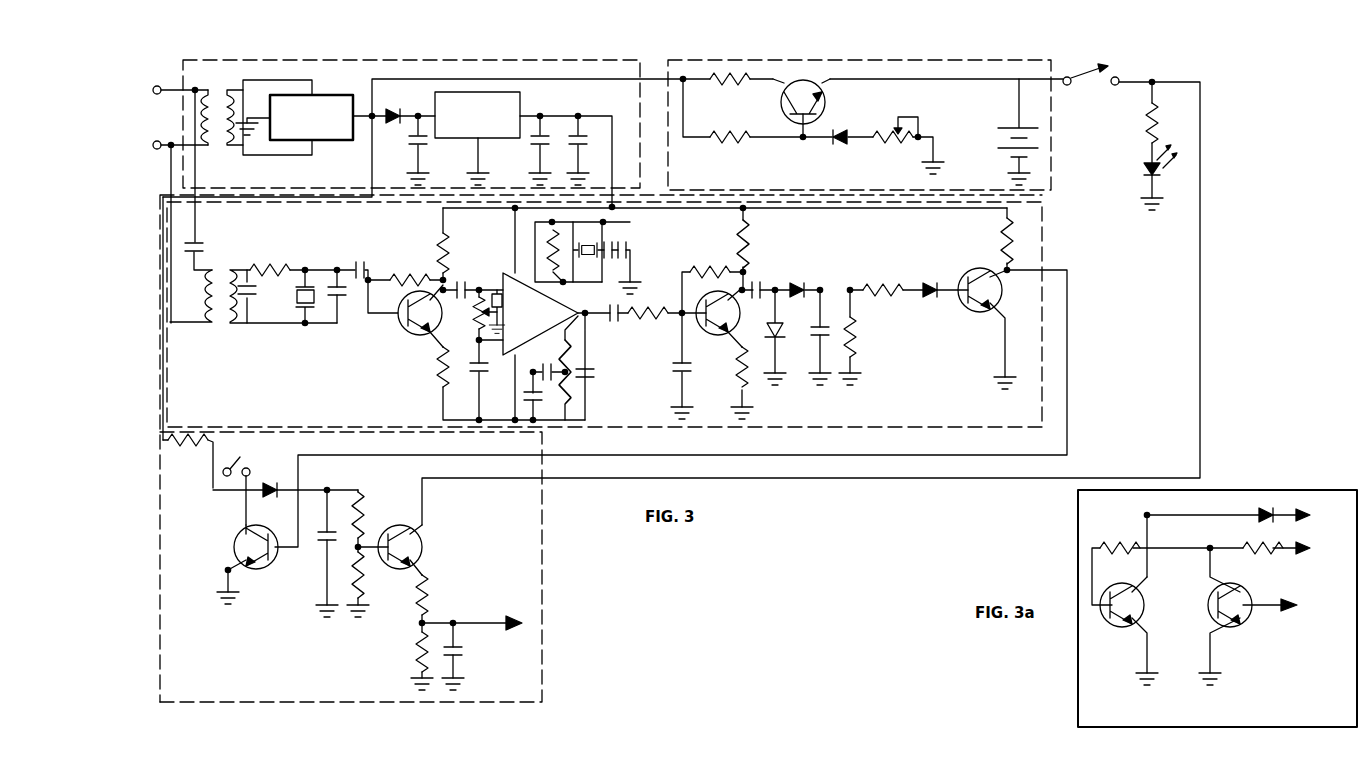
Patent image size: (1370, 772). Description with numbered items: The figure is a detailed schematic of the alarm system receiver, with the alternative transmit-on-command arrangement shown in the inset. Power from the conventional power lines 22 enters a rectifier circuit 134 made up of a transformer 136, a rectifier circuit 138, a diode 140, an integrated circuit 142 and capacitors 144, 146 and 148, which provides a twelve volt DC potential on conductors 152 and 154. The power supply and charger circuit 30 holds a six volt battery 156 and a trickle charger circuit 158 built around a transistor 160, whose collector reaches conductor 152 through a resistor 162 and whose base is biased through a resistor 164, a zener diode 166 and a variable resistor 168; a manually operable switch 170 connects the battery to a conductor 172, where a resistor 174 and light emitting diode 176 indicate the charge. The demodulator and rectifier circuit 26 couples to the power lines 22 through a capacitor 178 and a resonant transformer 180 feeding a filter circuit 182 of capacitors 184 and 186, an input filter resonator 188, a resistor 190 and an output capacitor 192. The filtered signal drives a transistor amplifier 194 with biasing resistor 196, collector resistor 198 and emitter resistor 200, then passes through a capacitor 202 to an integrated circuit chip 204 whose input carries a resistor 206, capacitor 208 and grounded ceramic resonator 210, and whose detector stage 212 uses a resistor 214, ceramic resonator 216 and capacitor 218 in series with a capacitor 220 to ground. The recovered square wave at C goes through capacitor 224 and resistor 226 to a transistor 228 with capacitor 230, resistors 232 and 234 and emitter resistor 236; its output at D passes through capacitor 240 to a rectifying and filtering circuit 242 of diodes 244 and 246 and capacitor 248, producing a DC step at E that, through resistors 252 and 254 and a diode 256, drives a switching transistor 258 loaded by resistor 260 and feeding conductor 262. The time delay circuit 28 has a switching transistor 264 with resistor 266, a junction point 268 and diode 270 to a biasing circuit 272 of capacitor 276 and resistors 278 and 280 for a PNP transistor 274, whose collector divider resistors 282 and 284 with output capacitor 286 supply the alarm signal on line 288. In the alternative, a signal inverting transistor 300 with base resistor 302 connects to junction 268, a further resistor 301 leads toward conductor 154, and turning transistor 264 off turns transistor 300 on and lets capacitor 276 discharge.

In FIG. 3, the power lines 22 is at (162, 70).
In FIG. 3, the demodulator and rectifier circuit 26 is at (1042, 318).
In FIG. 3, the time delay circuit 28 is at (542, 614).
In FIG. 3, the power supply and charger circuit 30 is at (886, 60).
In FIG. 3, the rectifier circuit 134 is at (375, 49).
In FIG. 3, the transformer 136 is at (220, 90).
In FIG. 3, the rectifier circuit 138 is at (290, 95).
In FIG. 3, the diode 140 is at (394, 106).
In FIG. 3, the integrated circuit 142 is at (472, 92).
In FIG. 3, the capacitor 144 is at (430, 150).
In FIG. 3, the capacitor 146 is at (535, 150).
In FIG. 3, the capacitor 148 is at (588, 142).
In FIG. 3, the conductor 152 is at (160, 208).
In FIG. 3, the conductor 154 is at (820, 210).
In FIG. 3A, the conductor 154 is at (1317, 542).
In FIG. 3, the battery 156 is at (1018, 128).
In FIG. 3, the trickle charger circuit 158 is at (775, 72).
In FIG. 3, the transistor 160 is at (812, 90).
In FIG. 3, the resistor 162 is at (732, 78).
In FIG. 3, the resistor 164 is at (729, 136).
In FIG. 3, the zener diode 166 is at (841, 128).
In FIG. 3, the variable resistor 168 is at (884, 134).
In FIG. 3, the manually operable switch 170 is at (1096, 74).
In FIG. 3, the conductor 172 is at (1168, 82).
In FIG. 3, the resistor 174 is at (1148, 130).
In FIG. 3, the light emitting diode 176 is at (1142, 177).
In FIG. 3, the capacitor 178 is at (194, 250).
In FIG. 3, the resonant transformer 180 is at (218, 340).
In FIG. 3, the filter circuit 182 is at (297, 336).
In FIG. 3, the capacitor 184 is at (248, 308).
In FIG. 3, the capacitor 186 is at (346, 312).
In FIG. 3, the input filter resonator 188 is at (324, 270).
In FIG. 3, the resistor 190 is at (263, 264).
In FIG. 3, the output capacitor 192 is at (356, 262).
In FIG. 3, the transistor amplifier 194 is at (414, 336).
In FIG. 3, the biasing resistor 196 is at (400, 278).
In FIG. 3, the collector resistor 198 is at (442, 234).
In FIG. 3, the emitter resistor 200 is at (442, 386).
In FIG. 3, the capacitor 202 is at (460, 276).
In FIG. 3, the integrated circuit chip 204 is at (548, 326).
In FIG. 3, the resistor 206 is at (478, 313).
In FIG. 3, the capacitor 208 is at (480, 378).
In FIG. 3, the ceramic resonator 210 is at (494, 286).
In FIG. 3, the detector stage 212 is at (663, 242).
In FIG. 3, the resistor 214 is at (563, 283).
In FIG. 3, the ceramic resonator 216 is at (618, 258).
In FIG. 3, the capacitor 218 is at (612, 244).
In FIG. 3, the capacitor 220 is at (636, 248).
In FIG. 3, the capacitor 224 is at (626, 322).
In FIG. 3, the resistor 226 is at (667, 304).
In FIG. 3, the transistor 228 is at (724, 338).
In FIG. 3, the capacitor 230 is at (680, 354).
In FIG. 3, the resistor 232 is at (712, 281).
In FIG. 3, the resistor 234 is at (746, 252).
In FIG. 3, the resistor 236 is at (746, 390).
In FIG. 3, the capacitor 240 is at (762, 298).
In FIG. 3, the ground network 242 is at (804, 384).
In FIG. 3, the diode 244 is at (788, 337).
In FIG. 3, the diode 246 is at (794, 282).
In FIG. 3, the capacitor 248 is at (820, 338).
In FIG. 3, the resistor 252 is at (858, 342).
In FIG. 3, the resistor 254 is at (904, 286).
In FIG. 3, the diode 256 is at (932, 306).
In FIG. 3, the switching transistor 258 is at (1002, 290).
In FIG. 3A, the switching transistor 258 is at (1305, 600).
In FIG. 3, the resistor 260 is at (1015, 242).
In FIG. 3, the conductor 262 is at (1067, 379).
In FIG. 3A, the conductor 262 is at (1262, 610).
In FIG. 3, the switching transistor 264 is at (235, 547).
In FIG. 3A, the switching transistor 264 is at (1252, 584).
In FIG. 3, the resistor 266 is at (188, 461).
In FIG. 3, the junction point 268 is at (220, 478).
In FIG. 3A, the junction point 268 is at (1141, 520).
In FIG. 3, the diode 270 is at (268, 480).
In FIG. 3A, the diode 270 is at (1269, 507).
In FIG. 3, the biasing circuit 272 is at (302, 594).
In FIG. 3, the transistor 274 is at (420, 558).
In FIG. 3A, the transistor 274 is at (1317, 509).
In FIG. 3, the capacitor 276 is at (317, 548).
In FIG. 3, the voltage dividing resistor 278 is at (360, 508).
In FIG. 3, the voltage dividing resistor 280 is at (372, 584).
In FIG. 3, the voltage divider resistor 282 is at (425, 598).
In FIG. 3, the voltage divider resistor 284 is at (418, 652).
In FIG. 3, the output capacitor 286 is at (464, 656).
In FIG. 3, the line 288 is at (472, 620).
In FIG. 3A, the signal inverting transistor 300 is at (1112, 624).
In FIG. 3A, the resistor 301 is at (1251, 546).
In FIG. 3A, the resistor 302 is at (1107, 534).
In FIG. 3, the output point C is at (588, 316).
In FIG. 3, the output point D is at (746, 286).
In FIG. 3, the output point E is at (822, 288).